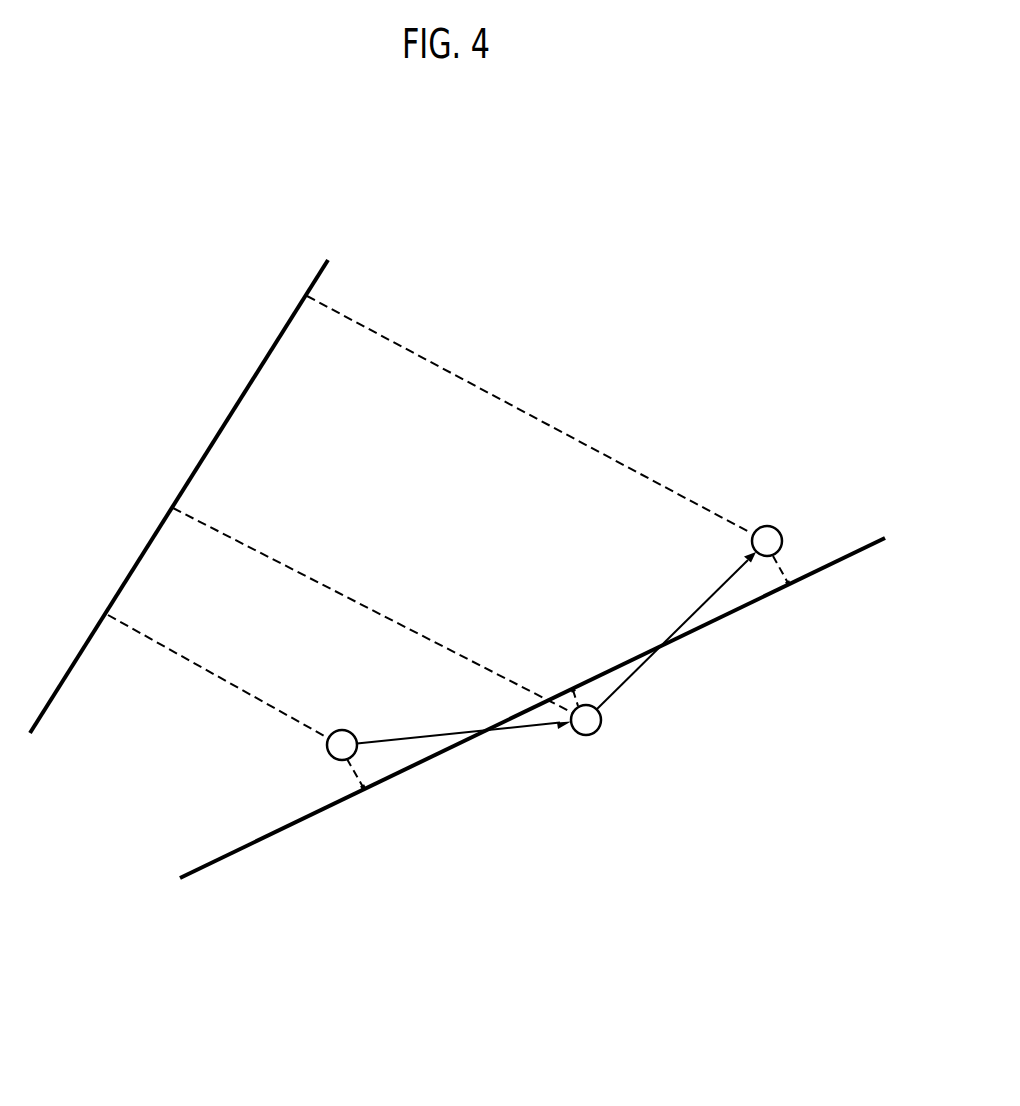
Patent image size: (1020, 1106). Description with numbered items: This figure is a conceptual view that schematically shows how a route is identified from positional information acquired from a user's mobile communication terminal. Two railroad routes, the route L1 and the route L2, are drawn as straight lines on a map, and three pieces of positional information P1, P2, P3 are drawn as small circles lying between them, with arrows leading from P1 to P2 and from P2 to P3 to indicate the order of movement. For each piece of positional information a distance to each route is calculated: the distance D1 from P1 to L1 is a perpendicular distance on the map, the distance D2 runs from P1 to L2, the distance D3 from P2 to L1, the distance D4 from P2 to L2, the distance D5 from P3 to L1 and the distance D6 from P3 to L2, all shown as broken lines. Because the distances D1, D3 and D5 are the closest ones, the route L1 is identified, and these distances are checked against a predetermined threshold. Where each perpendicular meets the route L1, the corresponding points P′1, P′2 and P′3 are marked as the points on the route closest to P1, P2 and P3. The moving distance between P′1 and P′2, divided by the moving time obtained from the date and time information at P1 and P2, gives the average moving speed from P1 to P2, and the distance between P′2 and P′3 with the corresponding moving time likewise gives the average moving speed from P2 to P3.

The railroad route L1 is at (547, 697).
The railroad route L2 is at (190, 477).
The positional information P1 is at (358, 731).
The positional information P2 is at (587, 741).
The positional information P3 is at (767, 521).
The point corresponding to P1 in L1 P′1 is at (376, 807).
The point corresponding to P2 in L1 P′2 is at (561, 670).
The point corresponding to P3 in L1 P′3 is at (800, 604).
The distance from P1 to L1 D1 is at (337, 777).
The distance from P1 to L2 D2 is at (218, 676).
The distance from P2 to L1 D3 is at (597, 692).
The distance from P2 to L2 D4 is at (373, 610).
The distance from P3 to L1 D5 is at (798, 561).
The distance from P3 to L2 D6 is at (529, 414).